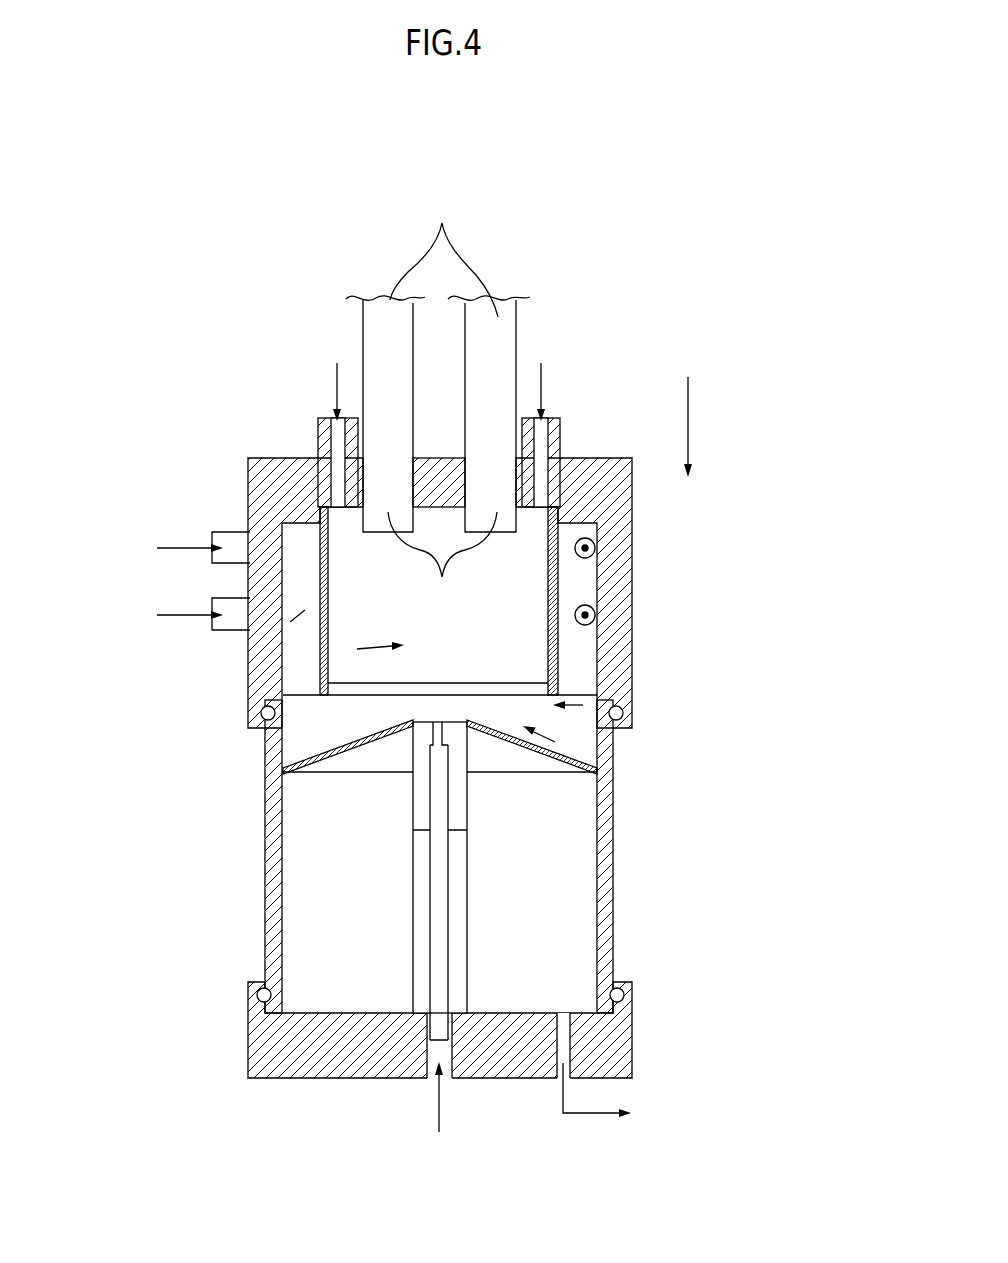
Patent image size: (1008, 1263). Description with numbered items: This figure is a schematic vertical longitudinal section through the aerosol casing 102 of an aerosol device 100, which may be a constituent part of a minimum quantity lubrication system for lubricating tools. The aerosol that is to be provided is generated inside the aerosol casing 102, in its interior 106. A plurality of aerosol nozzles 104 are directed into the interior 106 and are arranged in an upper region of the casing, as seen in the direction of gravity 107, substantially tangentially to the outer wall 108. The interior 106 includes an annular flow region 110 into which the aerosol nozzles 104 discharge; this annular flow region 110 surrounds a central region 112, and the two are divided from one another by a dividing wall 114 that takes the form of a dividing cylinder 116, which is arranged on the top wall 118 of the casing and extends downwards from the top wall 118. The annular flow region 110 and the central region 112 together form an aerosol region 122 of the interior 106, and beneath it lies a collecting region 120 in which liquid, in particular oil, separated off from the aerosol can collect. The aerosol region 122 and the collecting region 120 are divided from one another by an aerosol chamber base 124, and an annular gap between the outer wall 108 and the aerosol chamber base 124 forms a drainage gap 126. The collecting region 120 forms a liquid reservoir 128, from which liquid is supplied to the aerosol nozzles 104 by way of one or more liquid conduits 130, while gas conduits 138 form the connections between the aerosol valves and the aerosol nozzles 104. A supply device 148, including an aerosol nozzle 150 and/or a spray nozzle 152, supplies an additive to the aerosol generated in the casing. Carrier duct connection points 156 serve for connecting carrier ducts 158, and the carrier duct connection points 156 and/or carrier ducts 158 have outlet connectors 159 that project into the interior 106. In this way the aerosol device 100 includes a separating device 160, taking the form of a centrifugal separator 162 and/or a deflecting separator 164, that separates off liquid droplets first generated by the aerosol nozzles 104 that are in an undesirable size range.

The aerosol device 100 is at (638, 286).
The aerosol casing 102 is at (305, 917).
The aerosol nozzles 104 is at (597, 548).
The interior 106 is at (507, 653).
The direction of gravity 107 is at (688, 420).
The outer wall 108 is at (305, 925).
The annular flow region 110 is at (305, 610).
The central region 112 is at (320, 652).
The dividing wall 114 is at (562, 645).
The dividing cylinder 116 is at (560, 657).
The top wall 118 is at (590, 478).
The collecting region 120 is at (570, 917).
The aerosol region 122 is at (316, 720).
The aerosol chamber base 124 is at (313, 763).
The drainage gap 126 is at (282, 793).
The liquid reservoir 128 is at (570, 943).
The liquid conduits 130 is at (337, 380).
The gas conduits 138 is at (178, 548).
The supply device 148 is at (443, 740).
The aerosol nozzle 150 is at (443, 745).
The spray nozzle 152 is at (443, 750).
The carrier duct connection points 156 is at (442, 563).
The carrier ducts 158 is at (438, 360).
The outlet connectors 159 is at (335, 525).
The separating device 160 is at (605, 712).
The centrifugal separator 162 is at (555, 742).
The deflecting separator 164 is at (560, 758).